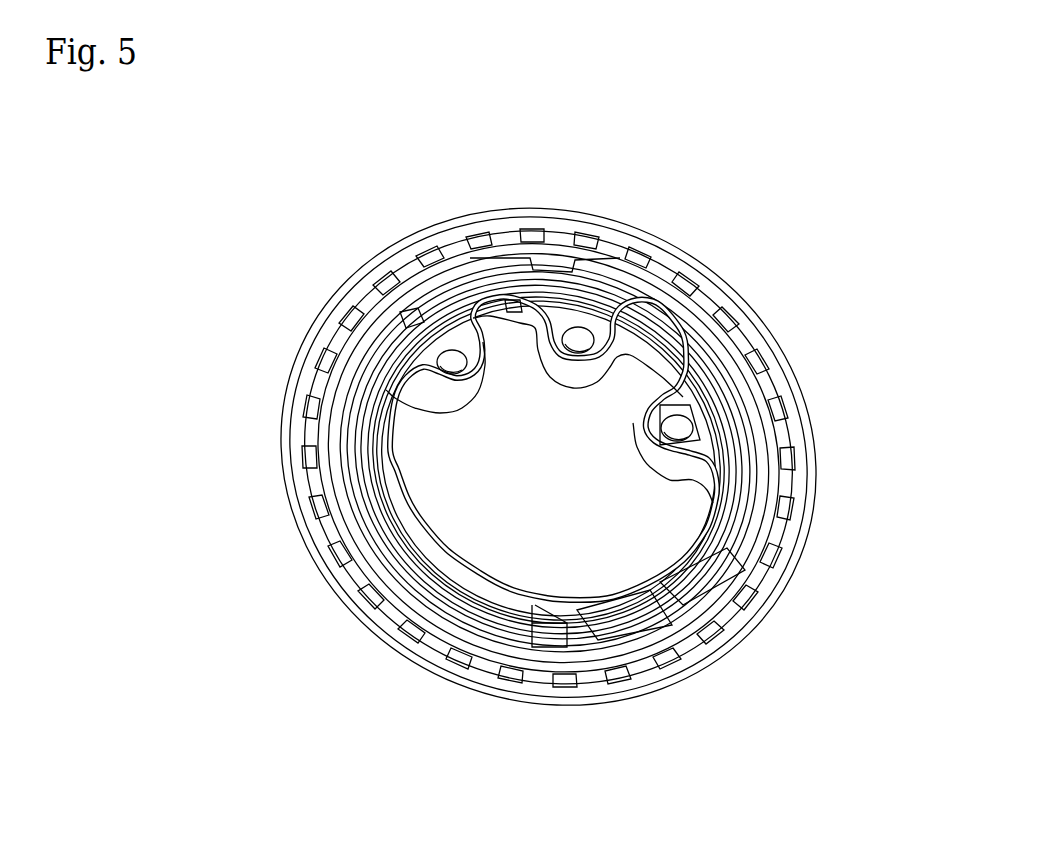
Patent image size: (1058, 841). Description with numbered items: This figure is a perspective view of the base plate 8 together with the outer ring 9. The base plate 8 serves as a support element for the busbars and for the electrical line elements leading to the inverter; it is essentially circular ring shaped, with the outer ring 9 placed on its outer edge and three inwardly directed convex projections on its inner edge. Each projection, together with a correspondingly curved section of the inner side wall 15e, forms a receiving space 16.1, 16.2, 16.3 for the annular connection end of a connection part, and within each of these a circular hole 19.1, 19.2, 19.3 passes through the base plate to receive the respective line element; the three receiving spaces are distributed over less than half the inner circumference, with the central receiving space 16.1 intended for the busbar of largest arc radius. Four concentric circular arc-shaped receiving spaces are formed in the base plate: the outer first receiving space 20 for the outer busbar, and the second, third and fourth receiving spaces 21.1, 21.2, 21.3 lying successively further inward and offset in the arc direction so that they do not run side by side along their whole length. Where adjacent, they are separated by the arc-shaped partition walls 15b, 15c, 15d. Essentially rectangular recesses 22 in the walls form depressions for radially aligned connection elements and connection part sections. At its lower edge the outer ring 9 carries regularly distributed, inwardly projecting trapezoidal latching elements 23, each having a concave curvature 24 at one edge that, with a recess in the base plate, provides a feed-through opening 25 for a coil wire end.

The base plate 8 is at (288, 278).
The outer ring 9 is at (300, 492).
The partition wall 15b is at (340, 447).
The partition wall 15c is at (347, 465).
The partition wall 15d is at (343, 418).
The inner side wall 15e is at (650, 352).
The receiving space 16.1 is at (600, 340).
The receiving space 16.2 is at (352, 398).
The receiving space 16.3 is at (740, 412).
The circular hole 19.1 is at (512, 305).
The circular hole 19.2 is at (412, 318).
The circular hole 19.3 is at (680, 425).
The first receiving space 20 is at (348, 520).
The second receiving space 21.1 is at (380, 552).
The third receiving space 21.2 is at (420, 575).
The fourth receiving space 21.3 is at (340, 390).
The recess 22 is at (447, 352).
The latching element 23 is at (790, 493).
The concave curvature 24 is at (805, 558).
The feed-through opening 25 is at (783, 600).